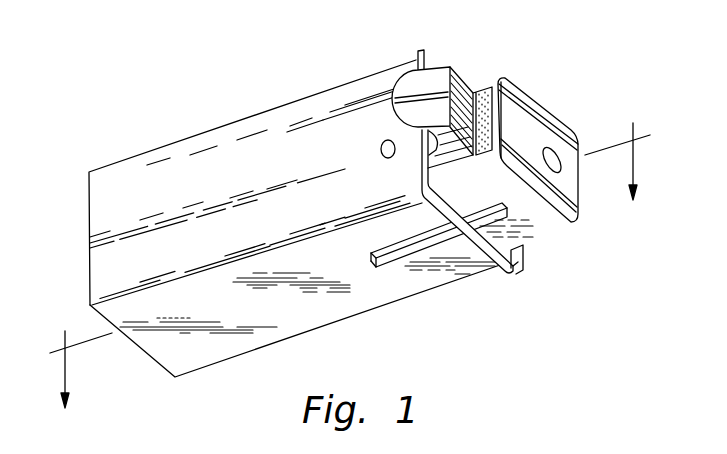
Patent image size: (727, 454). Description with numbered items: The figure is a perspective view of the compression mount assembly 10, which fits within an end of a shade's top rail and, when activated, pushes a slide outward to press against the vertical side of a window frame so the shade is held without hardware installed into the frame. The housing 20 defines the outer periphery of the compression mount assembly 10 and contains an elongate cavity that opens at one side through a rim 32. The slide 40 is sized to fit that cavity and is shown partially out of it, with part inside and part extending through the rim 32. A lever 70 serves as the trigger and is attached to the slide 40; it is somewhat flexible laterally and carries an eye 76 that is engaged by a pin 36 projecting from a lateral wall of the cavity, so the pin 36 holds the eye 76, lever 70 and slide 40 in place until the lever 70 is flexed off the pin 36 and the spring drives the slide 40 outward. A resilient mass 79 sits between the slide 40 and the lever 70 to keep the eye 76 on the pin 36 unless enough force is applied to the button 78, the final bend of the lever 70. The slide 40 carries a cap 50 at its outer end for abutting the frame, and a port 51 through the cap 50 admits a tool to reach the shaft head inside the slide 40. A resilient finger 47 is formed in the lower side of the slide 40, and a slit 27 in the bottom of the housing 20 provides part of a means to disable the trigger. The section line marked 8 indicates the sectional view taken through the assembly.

The compression mount assembly 10 is at (152, 84).
The housing 20 is at (121, 161).
The slit 27 is at (399, 254).
The rim 32 is at (508, 277).
The pin 36 is at (383, 143).
The slide 40 is at (555, 227).
The finger 47 is at (523, 246).
The cap 50 is at (519, 94).
The port 51 is at (549, 148).
The lever 70 is at (457, 82).
The eye 76 is at (423, 160).
The button 78 is at (412, 88).
The resilient mass 79 is at (485, 100).
The section line 8- 8 is at (350, 282).